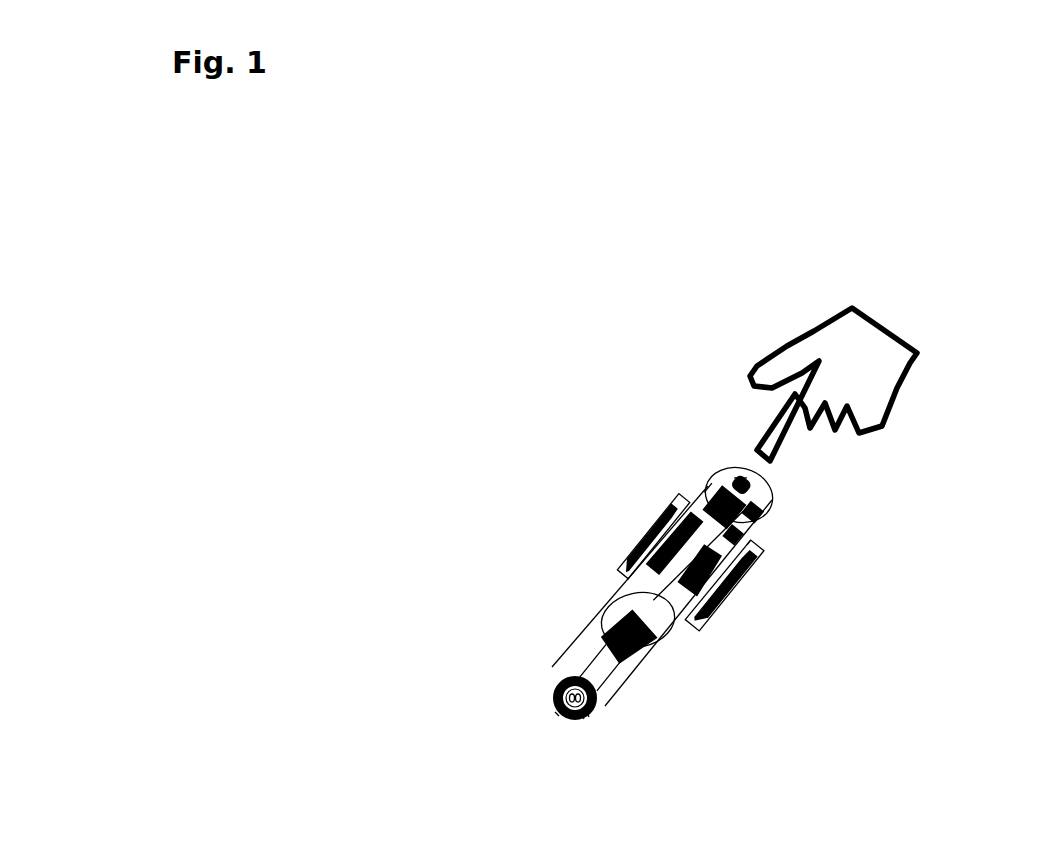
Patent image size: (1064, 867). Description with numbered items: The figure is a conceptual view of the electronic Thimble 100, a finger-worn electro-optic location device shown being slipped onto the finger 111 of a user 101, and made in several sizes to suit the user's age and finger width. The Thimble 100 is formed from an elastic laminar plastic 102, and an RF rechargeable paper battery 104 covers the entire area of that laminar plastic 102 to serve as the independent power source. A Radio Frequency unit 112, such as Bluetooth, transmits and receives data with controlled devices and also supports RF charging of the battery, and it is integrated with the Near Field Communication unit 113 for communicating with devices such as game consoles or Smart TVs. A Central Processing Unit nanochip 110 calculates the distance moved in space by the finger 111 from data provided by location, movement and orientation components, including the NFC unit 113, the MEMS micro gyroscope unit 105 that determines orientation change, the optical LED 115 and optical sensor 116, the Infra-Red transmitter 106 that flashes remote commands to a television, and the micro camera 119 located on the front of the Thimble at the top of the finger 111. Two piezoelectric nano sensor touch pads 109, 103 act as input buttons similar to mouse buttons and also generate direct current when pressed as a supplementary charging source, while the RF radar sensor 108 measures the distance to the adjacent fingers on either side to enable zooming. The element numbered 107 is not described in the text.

The electronic Thimble 100 is at (515, 207).
The user 101 is at (903, 303).
The elastic laminar plastic 102 is at (764, 500).
The piezoelectric touch pad 103 is at (764, 597).
The RF rechargeable paper battery 104 is at (690, 618).
The MEMS Micro Gyroscope unit 105 is at (663, 663).
The Infra-Red transmitter 106 is at (602, 727).
The housing 107 is at (594, 612).
The RF Radar sensor 108 is at (647, 578).
The piezoelectric touch pad 109 is at (643, 524).
The Central Processing Unit Nanochip 110 is at (719, 485).
The finger 111 is at (743, 427).
The Radio Frequency unit 112 is at (746, 470).
The Near Field Communication unit 113 is at (760, 545).
The optical LED 115 is at (572, 720).
The optical sensor 116 is at (559, 717).
The Micro Camera 119 is at (584, 722).